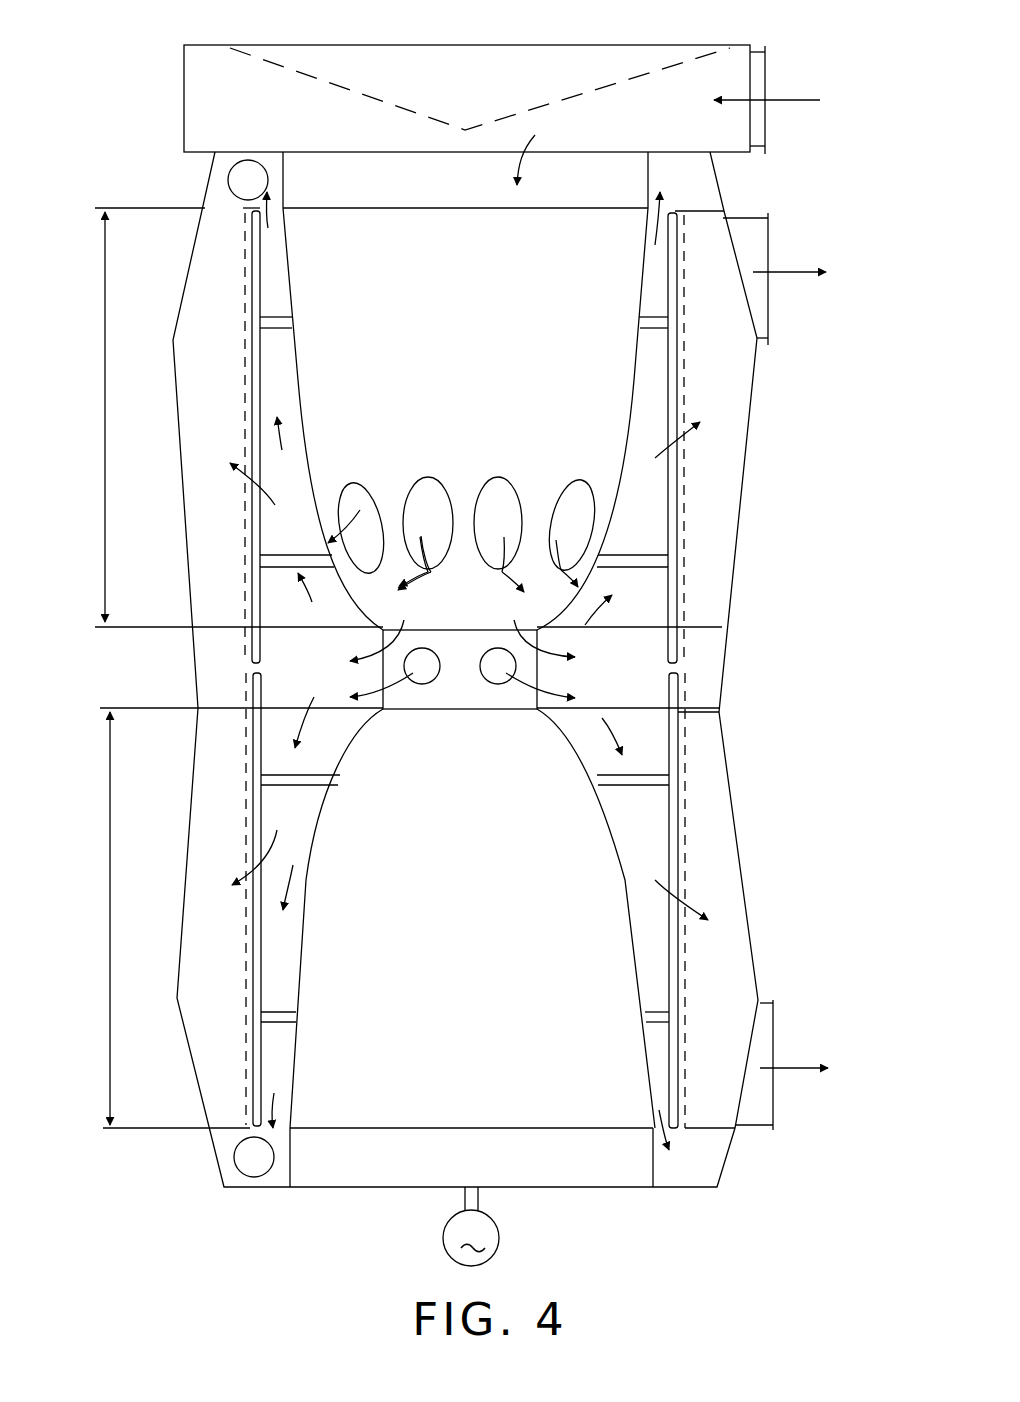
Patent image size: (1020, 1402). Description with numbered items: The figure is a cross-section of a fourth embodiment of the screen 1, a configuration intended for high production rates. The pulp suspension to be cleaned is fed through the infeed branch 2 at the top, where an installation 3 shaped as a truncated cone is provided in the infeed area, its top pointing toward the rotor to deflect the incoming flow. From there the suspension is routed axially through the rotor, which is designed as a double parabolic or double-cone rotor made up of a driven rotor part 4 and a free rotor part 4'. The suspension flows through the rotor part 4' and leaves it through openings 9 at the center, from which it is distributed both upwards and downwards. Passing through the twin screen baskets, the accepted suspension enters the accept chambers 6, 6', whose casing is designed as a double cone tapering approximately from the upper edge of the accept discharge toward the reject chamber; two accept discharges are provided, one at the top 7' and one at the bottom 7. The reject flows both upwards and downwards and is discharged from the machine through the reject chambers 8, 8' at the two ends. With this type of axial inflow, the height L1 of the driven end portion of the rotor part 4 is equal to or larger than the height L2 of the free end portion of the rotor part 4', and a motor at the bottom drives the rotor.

The screen 1 is at (738, 22).
The infeed branch 2 is at (756, 129).
The installation 3 is at (459, 99).
The rotor part 4 is at (472, 987).
The rotor part 4' is at (465, 430).
The accept chamber 6 is at (473, 911).
The accept chamber 6' is at (419, 427).
The accept discharge 7 is at (791, 1065).
The accept discharge 7' is at (774, 279).
The reject discharge 8 is at (221, 1160).
The reject discharge 8' is at (205, 180).
The openings 9 is at (499, 495).
The height of driven end portion L1 is at (91, 918).
The height of free end portion L2 is at (82, 417).